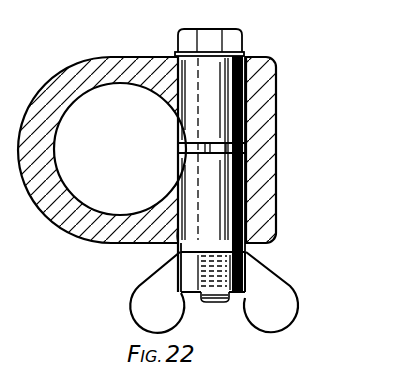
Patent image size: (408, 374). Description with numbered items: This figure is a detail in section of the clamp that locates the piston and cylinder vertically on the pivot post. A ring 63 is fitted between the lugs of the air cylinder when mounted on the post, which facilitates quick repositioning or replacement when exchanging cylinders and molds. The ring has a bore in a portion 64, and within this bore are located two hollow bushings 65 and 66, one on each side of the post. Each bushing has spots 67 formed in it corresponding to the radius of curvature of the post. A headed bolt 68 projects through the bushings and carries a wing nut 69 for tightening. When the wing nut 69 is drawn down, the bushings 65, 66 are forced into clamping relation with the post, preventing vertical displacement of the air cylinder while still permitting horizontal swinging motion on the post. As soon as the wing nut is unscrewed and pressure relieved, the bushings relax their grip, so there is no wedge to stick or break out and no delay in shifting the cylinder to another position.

The ring 63 is at (100, 57).
The portion 64 is at (268, 73).
The hollow bushing 65 is at (244, 55).
The hollow bushing 66 is at (178, 247).
The spots 67 is at (181, 124).
The headed bolt 68 is at (214, 303).
The wing nut 69 is at (292, 298).